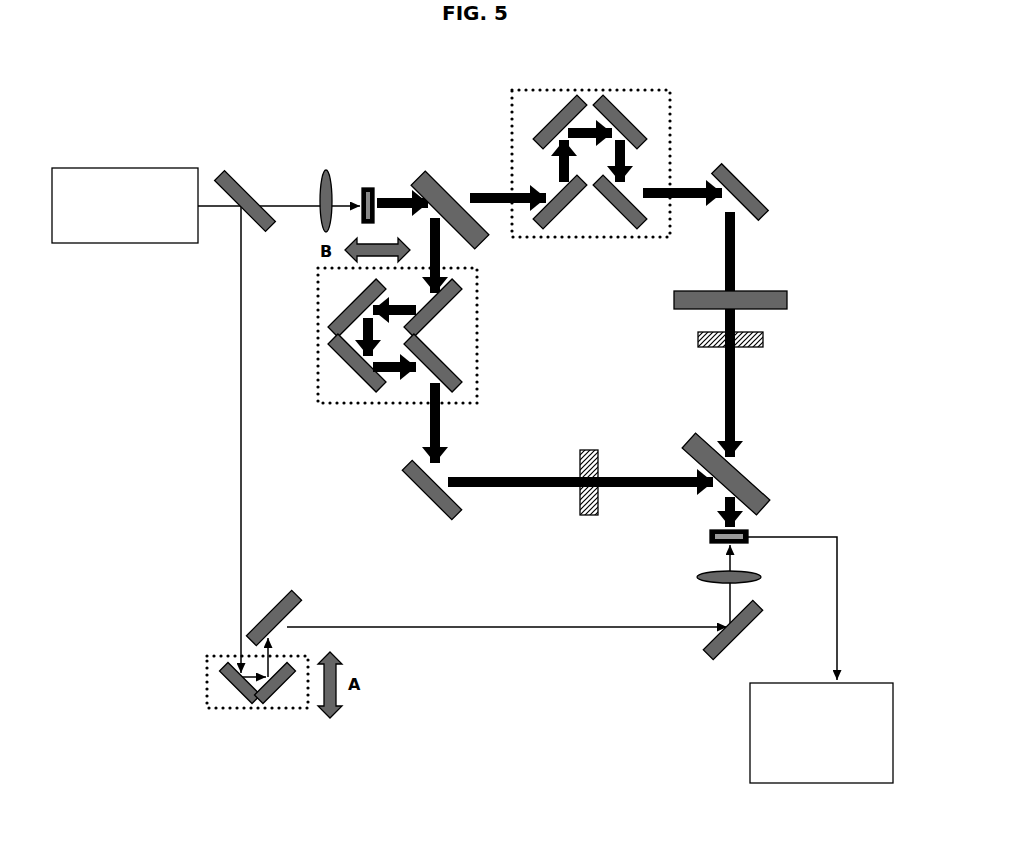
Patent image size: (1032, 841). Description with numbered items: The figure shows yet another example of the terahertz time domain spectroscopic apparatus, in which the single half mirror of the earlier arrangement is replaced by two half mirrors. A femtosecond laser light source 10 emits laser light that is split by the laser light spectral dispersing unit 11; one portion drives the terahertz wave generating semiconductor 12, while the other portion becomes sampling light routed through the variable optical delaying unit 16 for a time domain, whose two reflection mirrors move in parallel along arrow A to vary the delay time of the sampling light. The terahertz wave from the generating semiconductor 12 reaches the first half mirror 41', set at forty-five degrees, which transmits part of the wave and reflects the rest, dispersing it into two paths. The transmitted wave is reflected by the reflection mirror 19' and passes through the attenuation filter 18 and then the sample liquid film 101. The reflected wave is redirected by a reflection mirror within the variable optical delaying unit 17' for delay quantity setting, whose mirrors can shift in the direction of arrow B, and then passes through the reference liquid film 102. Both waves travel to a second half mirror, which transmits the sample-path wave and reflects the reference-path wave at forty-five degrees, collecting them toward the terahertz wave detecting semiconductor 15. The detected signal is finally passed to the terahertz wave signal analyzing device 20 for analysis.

The femtosecond laser light source 10 is at (118, 167).
The laser light spectral dispersing unit 11 is at (240, 178).
The terahertz wave generating semiconductor 12 is at (370, 187).
The first half mirror 41' is at (450, 192).
The reflection mirror 19' is at (614, 160).
The variable optical delaying unit for delay quantity setting 17' is at (385, 382).
The attenuation filter 18 is at (752, 290).
The sample liquid film 101 is at (698, 340).
The reference liquid film 102 is at (583, 450).
The terahertz wave detecting semiconductor 15 is at (750, 527).
The terahertz wave signal analyzing device 20 is at (770, 681).
The variable optical delaying unit for time domain 16 is at (208, 686).